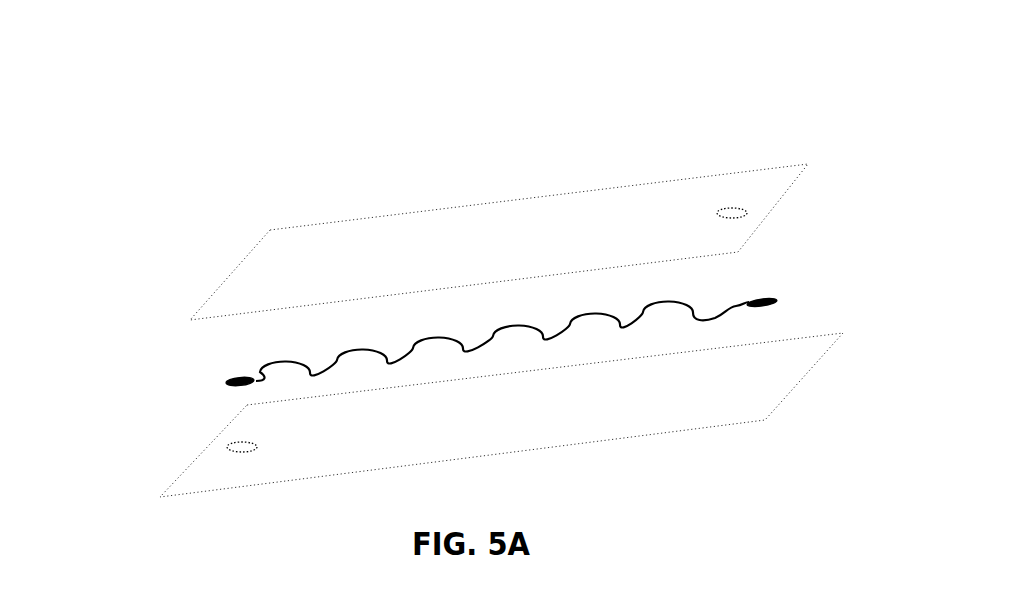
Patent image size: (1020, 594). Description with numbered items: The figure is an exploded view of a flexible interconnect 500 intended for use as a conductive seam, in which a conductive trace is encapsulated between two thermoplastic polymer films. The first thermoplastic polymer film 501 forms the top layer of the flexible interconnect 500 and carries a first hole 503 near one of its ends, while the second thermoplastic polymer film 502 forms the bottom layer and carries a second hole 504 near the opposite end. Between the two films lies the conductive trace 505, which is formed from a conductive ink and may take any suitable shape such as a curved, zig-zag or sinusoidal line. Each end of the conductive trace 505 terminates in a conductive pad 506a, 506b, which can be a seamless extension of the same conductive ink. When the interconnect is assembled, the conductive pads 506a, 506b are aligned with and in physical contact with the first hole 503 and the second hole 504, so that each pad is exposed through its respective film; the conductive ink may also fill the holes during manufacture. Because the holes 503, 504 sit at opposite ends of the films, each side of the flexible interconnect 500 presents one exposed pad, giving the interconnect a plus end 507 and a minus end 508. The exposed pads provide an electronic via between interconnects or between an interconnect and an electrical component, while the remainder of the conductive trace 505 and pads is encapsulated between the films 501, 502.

The flexible interconnect 500 is at (217, 55).
The first thermoplastic polymer film 501 is at (395, 250).
The second thermoplastic polymer film 502 is at (648, 410).
The first hole 503 is at (735, 212).
The second hole 504 is at (233, 447).
The conductive trace 505 is at (500, 332).
The conductive pad 506a is at (765, 292).
The conductive pad 506b is at (229, 382).
The plus end 507 is at (227, 508).
The minus end 508 is at (762, 128).